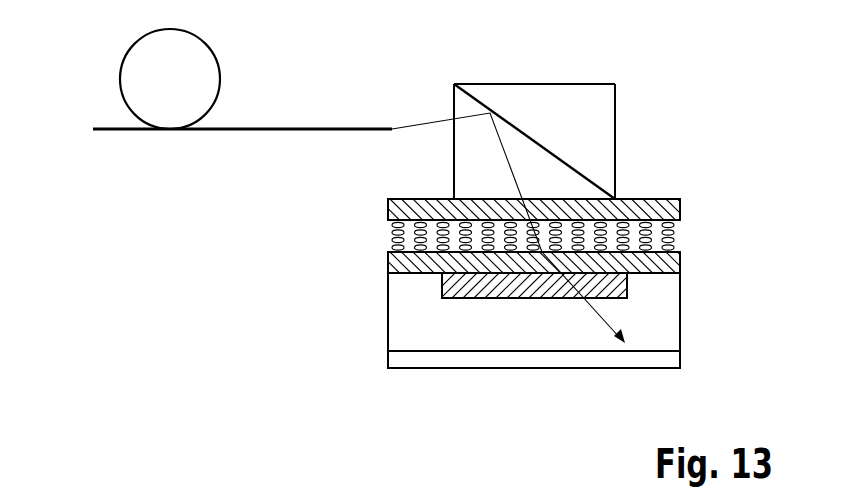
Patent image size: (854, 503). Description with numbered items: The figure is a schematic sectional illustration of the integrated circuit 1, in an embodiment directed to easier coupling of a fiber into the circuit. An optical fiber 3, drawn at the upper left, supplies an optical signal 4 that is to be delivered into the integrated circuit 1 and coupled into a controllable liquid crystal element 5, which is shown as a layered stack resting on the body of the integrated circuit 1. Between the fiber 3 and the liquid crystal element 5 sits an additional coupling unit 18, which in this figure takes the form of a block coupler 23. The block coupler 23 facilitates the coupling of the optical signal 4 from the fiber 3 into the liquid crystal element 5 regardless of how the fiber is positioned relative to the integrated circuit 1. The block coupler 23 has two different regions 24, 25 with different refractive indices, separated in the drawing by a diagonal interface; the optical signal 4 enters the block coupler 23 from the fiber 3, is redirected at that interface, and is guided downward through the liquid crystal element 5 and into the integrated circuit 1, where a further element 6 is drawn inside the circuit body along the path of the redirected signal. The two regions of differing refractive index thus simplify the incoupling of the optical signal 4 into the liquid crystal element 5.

The integrated circuit 1 is at (585, 369).
The optical fiber 3 is at (121, 60).
The optical signal 4 is at (420, 123).
The liquid crystal element 5 is at (650, 197).
The detector 6 is at (480, 298).
The coupling unit 18 is at (537, 99).
The block coupler 23 is at (537, 126).
The region 24 is at (451, 152).
The region 25 is at (616, 104).